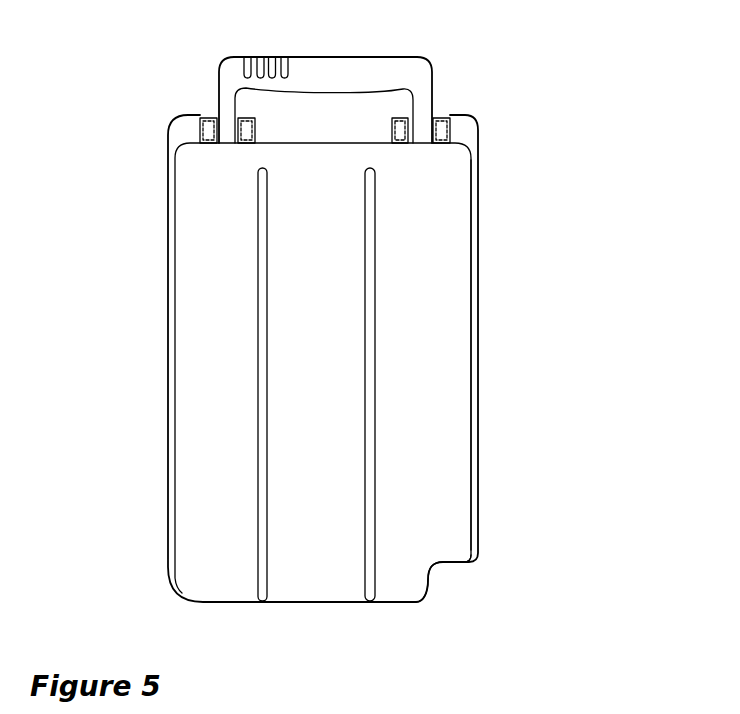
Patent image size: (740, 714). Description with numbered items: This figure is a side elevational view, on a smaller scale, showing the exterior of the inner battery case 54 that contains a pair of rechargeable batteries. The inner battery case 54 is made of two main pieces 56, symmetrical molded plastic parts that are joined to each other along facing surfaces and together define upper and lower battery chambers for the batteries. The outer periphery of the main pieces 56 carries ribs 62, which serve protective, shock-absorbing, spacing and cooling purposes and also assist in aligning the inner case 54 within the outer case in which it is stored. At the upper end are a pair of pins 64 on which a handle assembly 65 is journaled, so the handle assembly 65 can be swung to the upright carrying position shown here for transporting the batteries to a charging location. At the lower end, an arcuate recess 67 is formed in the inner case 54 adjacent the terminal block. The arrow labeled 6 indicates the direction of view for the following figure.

The inner battery case 54 is at (500, 151).
The main pieces 56 is at (457, 278).
The ribs 62 is at (167, 522).
The pins 64 is at (197, 130).
The handle assembly 65 is at (318, 67).
The arcuate recess 67 is at (443, 567).
The view direction arrow for FIG. 6 is at (528, 342).